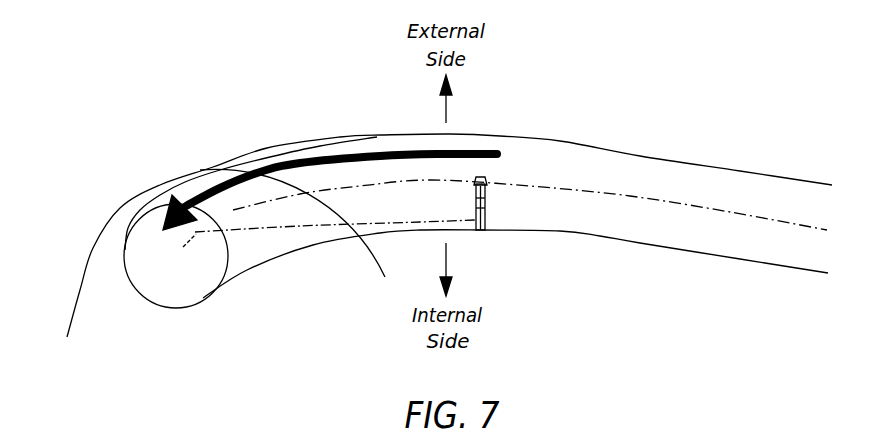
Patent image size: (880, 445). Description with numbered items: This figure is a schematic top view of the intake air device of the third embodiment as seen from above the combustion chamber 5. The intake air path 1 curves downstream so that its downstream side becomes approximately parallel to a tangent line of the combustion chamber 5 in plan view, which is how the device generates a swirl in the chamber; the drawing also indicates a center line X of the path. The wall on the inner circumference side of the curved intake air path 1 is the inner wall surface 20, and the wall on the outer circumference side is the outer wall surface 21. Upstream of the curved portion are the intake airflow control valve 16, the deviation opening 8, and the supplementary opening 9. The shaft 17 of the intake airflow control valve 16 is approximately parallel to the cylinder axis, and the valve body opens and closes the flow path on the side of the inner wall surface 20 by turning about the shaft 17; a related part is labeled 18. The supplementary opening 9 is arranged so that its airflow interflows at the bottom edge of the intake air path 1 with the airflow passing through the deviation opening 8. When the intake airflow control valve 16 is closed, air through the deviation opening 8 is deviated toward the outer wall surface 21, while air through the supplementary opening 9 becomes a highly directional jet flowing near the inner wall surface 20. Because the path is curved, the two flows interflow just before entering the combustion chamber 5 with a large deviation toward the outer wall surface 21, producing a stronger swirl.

The intake air path 1 is at (638, 155).
The combustion chamber 5 is at (98, 323).
The deviation opening 8 is at (482, 152).
The supplementary opening 9 is at (483, 233).
The intake airflow control valve 16 is at (487, 207).
The shaft 17 is at (485, 179).
The pin upper portion 18 is at (487, 198).
The inner wall surface 20 is at (417, 233).
The outer wall surface 21 is at (377, 137).
The central axis X is at (758, 217).